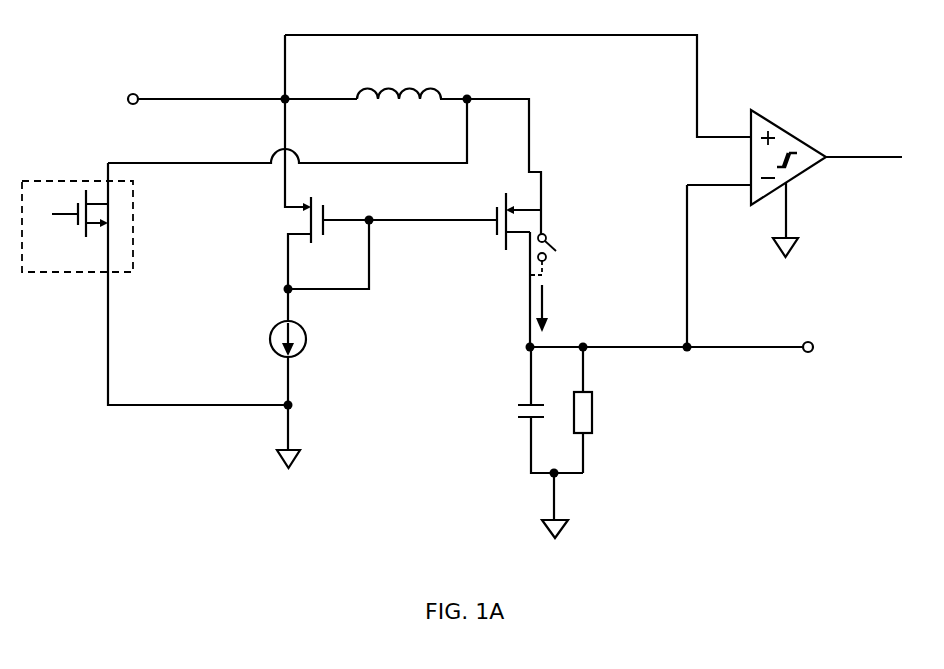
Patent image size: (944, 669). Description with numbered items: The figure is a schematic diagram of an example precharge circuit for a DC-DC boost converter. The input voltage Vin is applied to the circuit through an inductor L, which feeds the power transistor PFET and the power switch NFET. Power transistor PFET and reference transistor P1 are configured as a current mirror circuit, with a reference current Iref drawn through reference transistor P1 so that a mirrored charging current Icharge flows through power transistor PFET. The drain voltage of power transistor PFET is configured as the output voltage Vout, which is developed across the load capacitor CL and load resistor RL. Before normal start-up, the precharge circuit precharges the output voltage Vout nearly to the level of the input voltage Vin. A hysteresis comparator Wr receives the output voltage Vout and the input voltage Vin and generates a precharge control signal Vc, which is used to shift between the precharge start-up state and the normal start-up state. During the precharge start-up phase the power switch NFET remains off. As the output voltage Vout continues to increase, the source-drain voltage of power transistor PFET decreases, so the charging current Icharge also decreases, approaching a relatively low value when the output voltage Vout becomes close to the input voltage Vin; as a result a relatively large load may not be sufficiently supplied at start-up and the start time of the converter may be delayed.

The input voltage Vin is at (221, 94).
The inductor L is at (399, 81).
The power switch NFET is at (77, 226).
The reference transistor P1 is at (318, 259).
The power transistor PFET is at (549, 234).
The charging current Icharge is at (569, 308).
The reference current source Iref is at (302, 394).
The load capacitor CL is at (534, 410).
The load resistor RL is at (582, 442).
The output voltage Vout is at (834, 349).
The hysteresis comparator Wr is at (793, 183).
The comparator output / control voltage Vc is at (865, 145).